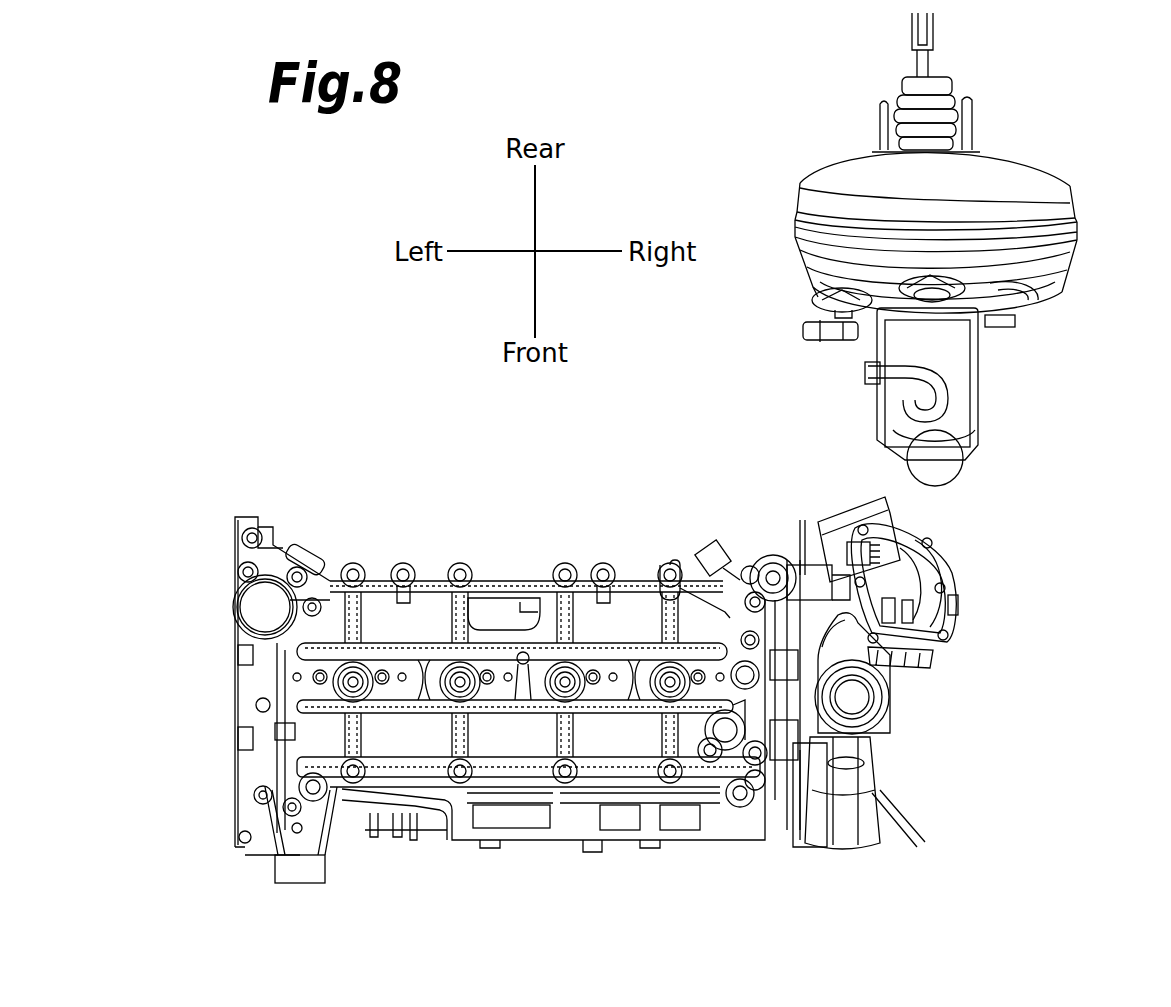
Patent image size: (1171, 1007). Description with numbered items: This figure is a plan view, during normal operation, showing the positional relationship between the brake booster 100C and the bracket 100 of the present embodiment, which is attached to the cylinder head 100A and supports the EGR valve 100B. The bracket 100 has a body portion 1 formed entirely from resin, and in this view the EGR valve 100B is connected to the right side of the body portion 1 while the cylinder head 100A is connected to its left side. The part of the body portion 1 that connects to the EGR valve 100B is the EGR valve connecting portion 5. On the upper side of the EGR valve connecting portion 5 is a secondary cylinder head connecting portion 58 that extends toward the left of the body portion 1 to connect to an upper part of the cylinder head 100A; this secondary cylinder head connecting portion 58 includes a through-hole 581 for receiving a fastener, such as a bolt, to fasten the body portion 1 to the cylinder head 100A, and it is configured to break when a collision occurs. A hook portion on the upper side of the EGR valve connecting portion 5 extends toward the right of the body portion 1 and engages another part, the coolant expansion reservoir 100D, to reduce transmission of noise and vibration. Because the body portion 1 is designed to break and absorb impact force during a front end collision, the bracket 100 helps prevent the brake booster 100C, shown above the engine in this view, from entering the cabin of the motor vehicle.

The cylinder head 100A is at (440, 615).
The EGR valve 100B is at (893, 577).
The brake booster 100C is at (1022, 178).
The coolant expansion reservoir 100D is at (873, 770).
The secondary cylinder head connecting portion 58 is at (777, 578).
The through-hole 581 is at (727, 613).
The EGR valve connecting portion 5 is at (817, 533).
The body portion 1 is at (817, 533).
The bracket 100 is at (832, 605).